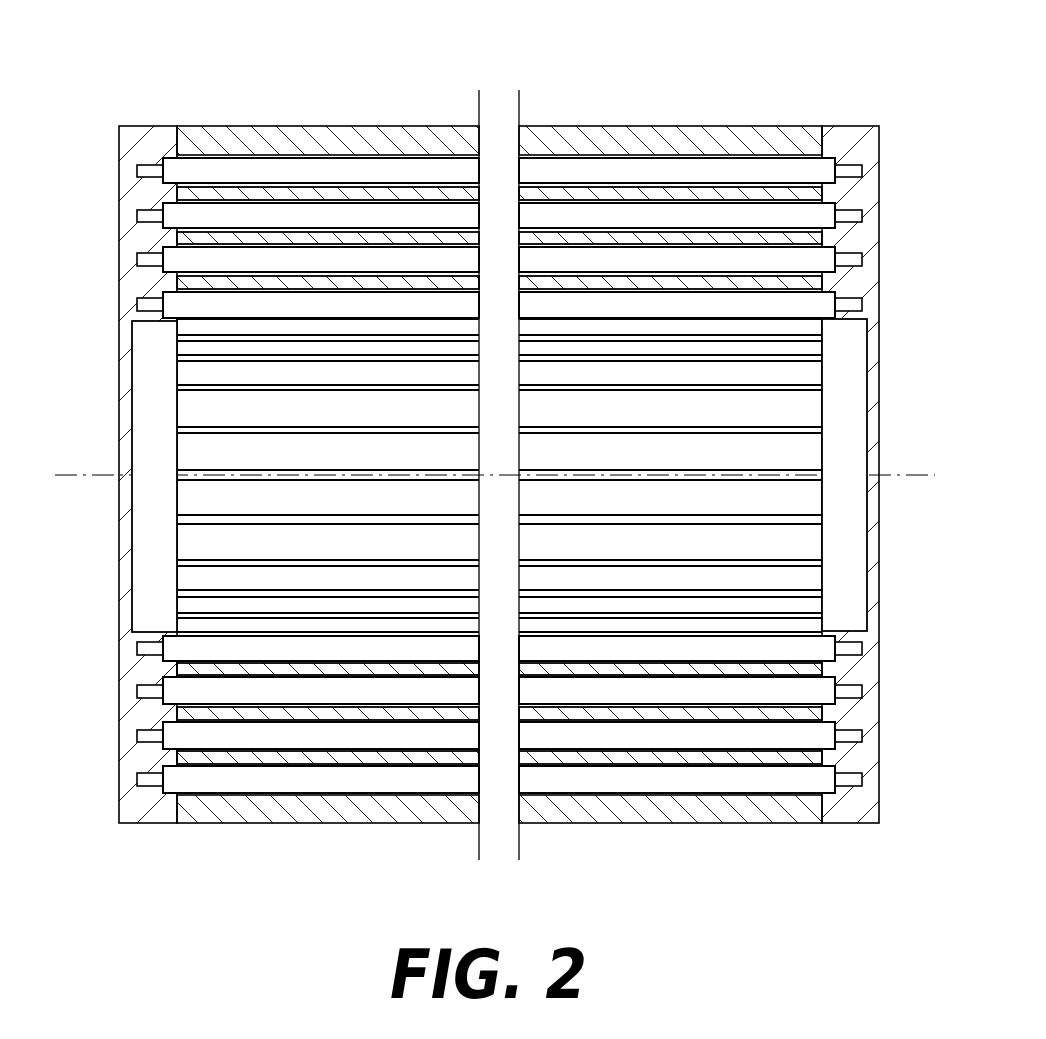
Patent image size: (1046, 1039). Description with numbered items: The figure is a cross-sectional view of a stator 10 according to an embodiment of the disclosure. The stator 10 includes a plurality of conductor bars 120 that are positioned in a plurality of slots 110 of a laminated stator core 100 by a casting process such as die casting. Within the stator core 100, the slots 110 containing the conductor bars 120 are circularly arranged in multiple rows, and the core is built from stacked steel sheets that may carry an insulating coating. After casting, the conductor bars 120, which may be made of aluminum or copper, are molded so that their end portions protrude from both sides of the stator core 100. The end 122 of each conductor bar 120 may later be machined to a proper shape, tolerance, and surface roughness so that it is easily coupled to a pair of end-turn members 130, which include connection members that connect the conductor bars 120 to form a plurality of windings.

The stator 10 is at (162, 37).
The laminated stator core 100 is at (499, 443).
The slots 110 is at (303, 138).
The conductor bars 120 is at (835, 300).
The end 122 is at (138, 172).
The end-turn members 130 is at (153, 132).